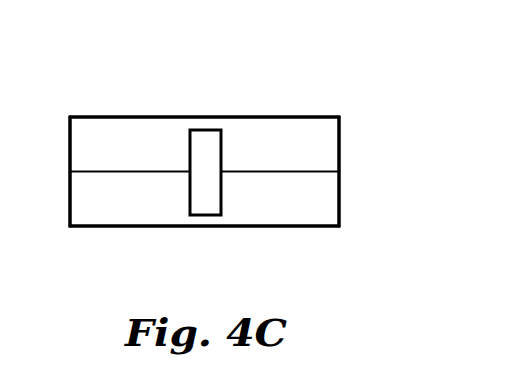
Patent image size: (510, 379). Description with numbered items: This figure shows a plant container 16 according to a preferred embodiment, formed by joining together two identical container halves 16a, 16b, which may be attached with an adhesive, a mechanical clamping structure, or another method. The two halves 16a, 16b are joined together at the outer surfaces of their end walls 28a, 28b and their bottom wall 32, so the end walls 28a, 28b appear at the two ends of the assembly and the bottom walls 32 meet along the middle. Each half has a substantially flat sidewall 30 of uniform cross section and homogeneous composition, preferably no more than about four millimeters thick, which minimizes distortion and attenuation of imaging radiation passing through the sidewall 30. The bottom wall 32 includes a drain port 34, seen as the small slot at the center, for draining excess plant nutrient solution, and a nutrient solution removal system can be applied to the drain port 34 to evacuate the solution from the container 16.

The container 16 is at (306, 78).
The container half 16a is at (147, 103).
The container half 16b is at (277, 241).
The end wall 28a is at (70, 148).
The end wall 28b is at (339, 155).
The sidewall 30 is at (193, 117).
The bottom wall 32 is at (253, 133).
The drain port 34 is at (202, 198).